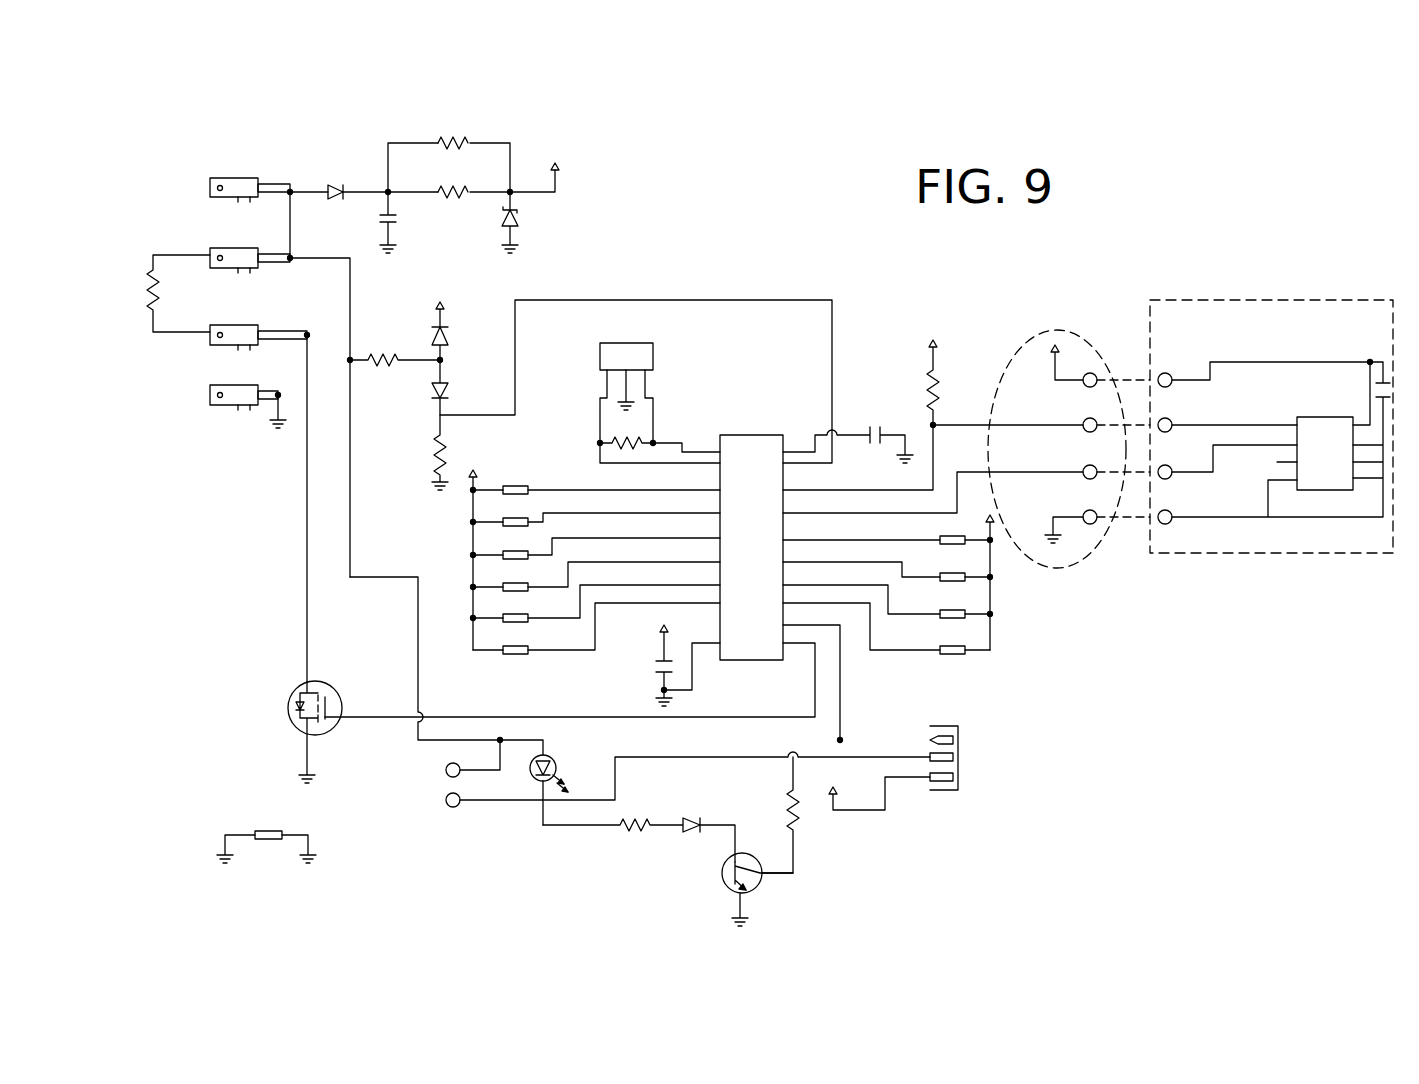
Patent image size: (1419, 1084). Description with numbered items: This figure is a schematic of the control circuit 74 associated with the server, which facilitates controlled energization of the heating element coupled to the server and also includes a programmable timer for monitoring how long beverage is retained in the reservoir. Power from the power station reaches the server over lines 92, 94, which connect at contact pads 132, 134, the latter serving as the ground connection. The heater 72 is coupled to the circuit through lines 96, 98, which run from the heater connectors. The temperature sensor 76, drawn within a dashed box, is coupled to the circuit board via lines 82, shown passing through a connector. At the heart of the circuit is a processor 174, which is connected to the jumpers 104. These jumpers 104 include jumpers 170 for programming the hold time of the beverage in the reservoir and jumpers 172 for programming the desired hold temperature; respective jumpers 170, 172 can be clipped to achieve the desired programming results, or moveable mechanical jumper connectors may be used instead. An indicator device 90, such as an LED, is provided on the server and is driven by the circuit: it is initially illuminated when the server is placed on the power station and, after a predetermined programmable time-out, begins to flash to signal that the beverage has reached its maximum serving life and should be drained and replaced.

The contact pad 132 is at (223, 181).
The line 92 is at (268, 185).
The line 96 is at (236, 255).
The heater 72 is at (152, 300).
The line 98 is at (250, 330).
The line 94 is at (273, 390).
The contact pad 134 is at (221, 408).
The jumpers 104 is at (732, 352).
The processor 174 is at (750, 433).
The jumpers 170 is at (584, 489).
The jumpers 172 is at (858, 508).
The lines 82 is at (1094, 345).
The temperature sensor 76 is at (1213, 299).
The indicator device 90 is at (531, 759).
The control circuit 74 is at (1113, 793).